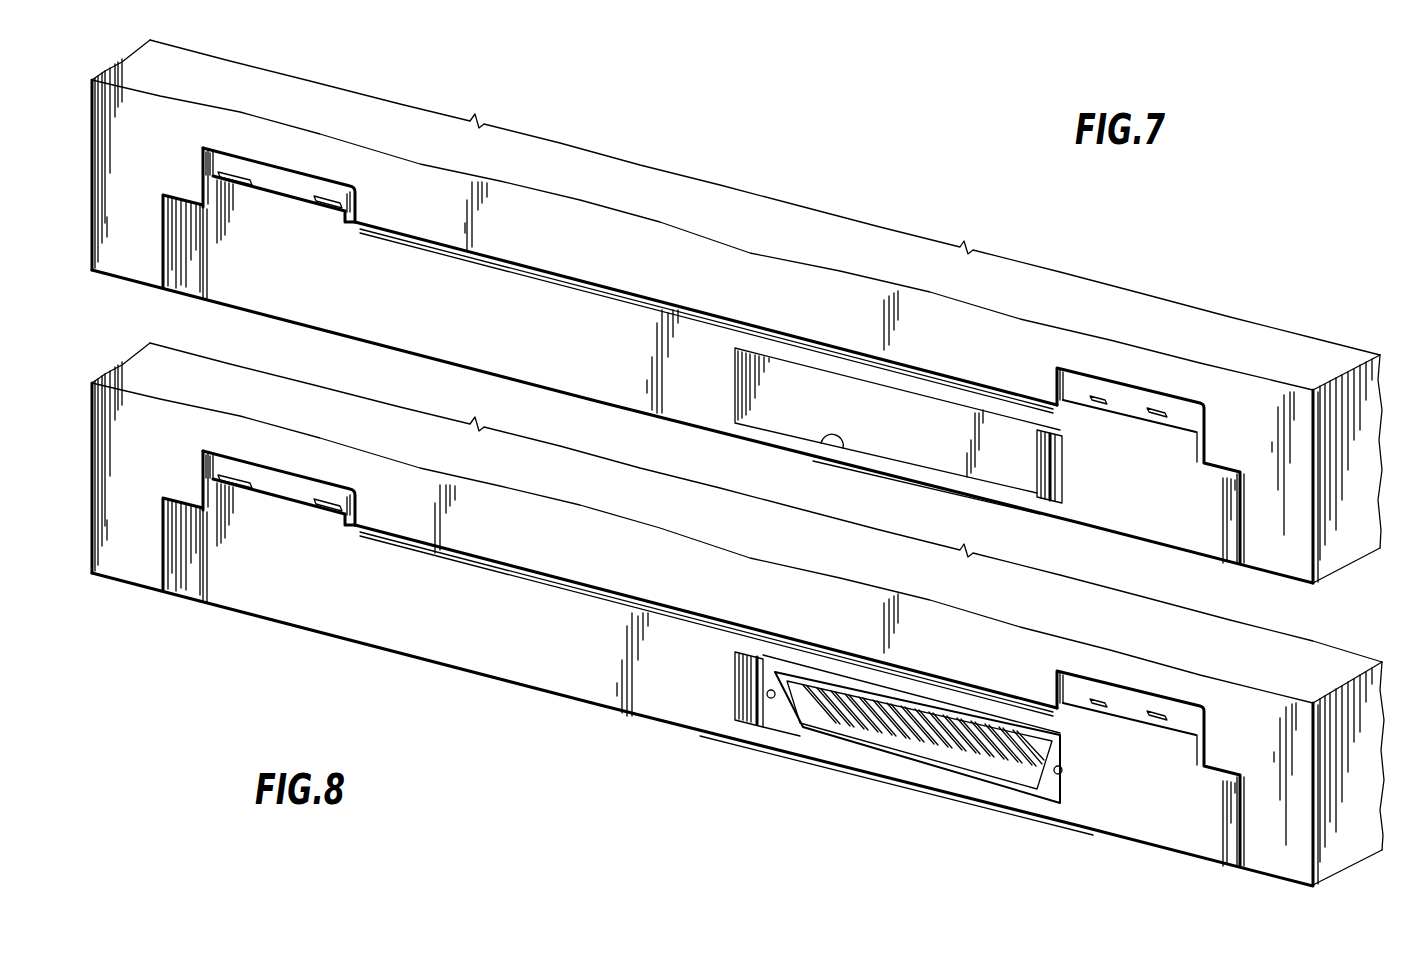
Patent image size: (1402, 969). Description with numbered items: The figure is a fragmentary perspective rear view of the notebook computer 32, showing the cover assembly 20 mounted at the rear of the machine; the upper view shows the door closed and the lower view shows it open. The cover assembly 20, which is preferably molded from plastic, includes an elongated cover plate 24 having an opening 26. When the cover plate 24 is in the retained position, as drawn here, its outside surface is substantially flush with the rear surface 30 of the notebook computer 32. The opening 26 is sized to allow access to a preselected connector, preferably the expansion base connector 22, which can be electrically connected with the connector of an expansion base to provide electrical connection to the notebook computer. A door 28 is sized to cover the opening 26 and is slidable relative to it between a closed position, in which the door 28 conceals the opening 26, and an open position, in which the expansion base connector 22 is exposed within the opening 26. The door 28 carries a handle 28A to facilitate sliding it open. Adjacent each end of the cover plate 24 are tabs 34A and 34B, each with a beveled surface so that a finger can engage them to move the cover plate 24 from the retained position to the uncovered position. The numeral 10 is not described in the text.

In FIG. 7, the housing 10 is at (80, 181).
In FIG. 8, the housing 10 is at (738, 614).
In FIG. 7, the cover assembly 20 is at (444, 368).
In FIG. 8, the cover assembly 20 is at (400, 668).
In FIG. 8, the expansion base connector 22 is at (806, 722).
In FIG. 7, the cover plate 24 is at (1146, 526).
In FIG. 8, the cover plate 24 is at (541, 668).
In FIG. 7, the opening 26 is at (818, 440).
In FIG. 8, the opening 26 is at (1050, 800).
In FIG. 7, the door 28 is at (948, 415).
In FIG. 7, the handle 28A is at (1041, 495).
In FIG. 8, the handle 28A is at (741, 730).
In FIG. 7, the rear surface 30 is at (1261, 390).
In FIG. 8, the rear surface 30 is at (1260, 857).
In FIG. 7, the notebook computer 32 is at (1361, 343).
In FIG. 8, the notebook computer 32 is at (1362, 651).
In FIG. 7, the tab 34A is at (337, 220).
In FIG. 7, the tab 34B is at (1158, 428).